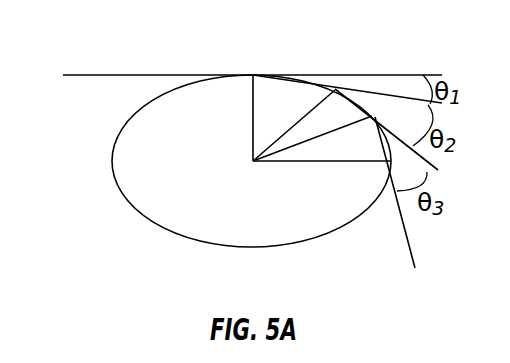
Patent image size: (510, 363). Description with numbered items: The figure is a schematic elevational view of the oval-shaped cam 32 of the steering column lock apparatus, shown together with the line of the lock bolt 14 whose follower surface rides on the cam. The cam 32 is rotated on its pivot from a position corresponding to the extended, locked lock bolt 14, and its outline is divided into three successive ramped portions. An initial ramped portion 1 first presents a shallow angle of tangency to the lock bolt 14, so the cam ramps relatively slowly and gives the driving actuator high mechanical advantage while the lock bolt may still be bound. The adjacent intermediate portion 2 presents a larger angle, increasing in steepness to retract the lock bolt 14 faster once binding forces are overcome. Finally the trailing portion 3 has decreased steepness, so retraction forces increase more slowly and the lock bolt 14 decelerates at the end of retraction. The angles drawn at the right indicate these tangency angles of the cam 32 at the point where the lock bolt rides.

The lock bolt 14 is at (173, 75).
The initial ramped portion 1 is at (255, 75).
The intermediate ramped portion 2 is at (333, 103).
The trailing ramped portion 3 is at (317, 151).
The cam 32 is at (208, 229).